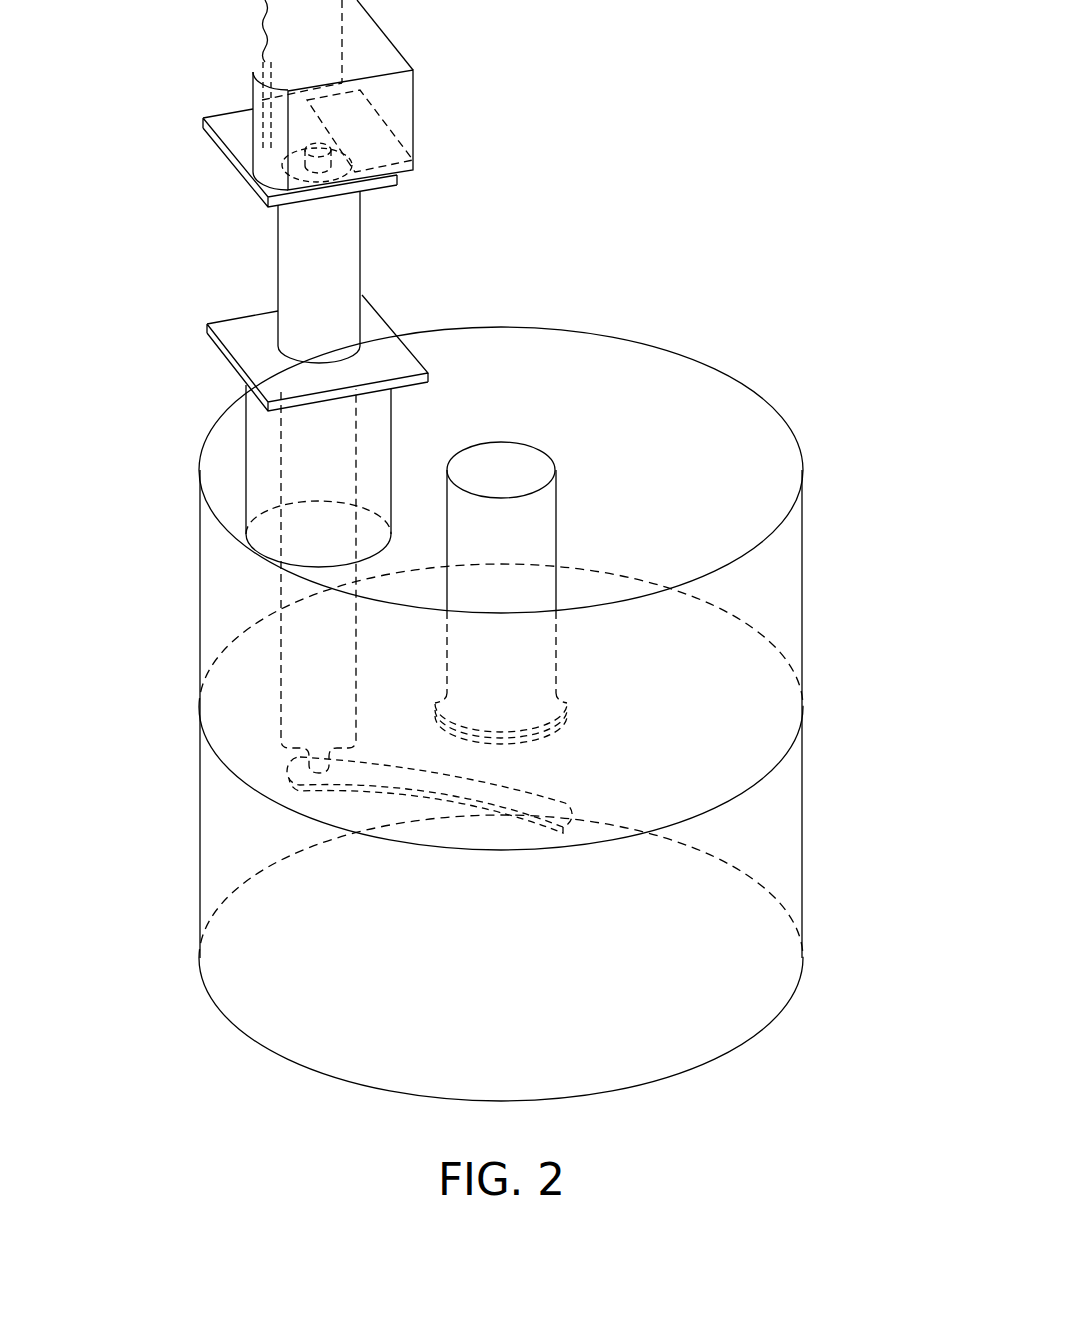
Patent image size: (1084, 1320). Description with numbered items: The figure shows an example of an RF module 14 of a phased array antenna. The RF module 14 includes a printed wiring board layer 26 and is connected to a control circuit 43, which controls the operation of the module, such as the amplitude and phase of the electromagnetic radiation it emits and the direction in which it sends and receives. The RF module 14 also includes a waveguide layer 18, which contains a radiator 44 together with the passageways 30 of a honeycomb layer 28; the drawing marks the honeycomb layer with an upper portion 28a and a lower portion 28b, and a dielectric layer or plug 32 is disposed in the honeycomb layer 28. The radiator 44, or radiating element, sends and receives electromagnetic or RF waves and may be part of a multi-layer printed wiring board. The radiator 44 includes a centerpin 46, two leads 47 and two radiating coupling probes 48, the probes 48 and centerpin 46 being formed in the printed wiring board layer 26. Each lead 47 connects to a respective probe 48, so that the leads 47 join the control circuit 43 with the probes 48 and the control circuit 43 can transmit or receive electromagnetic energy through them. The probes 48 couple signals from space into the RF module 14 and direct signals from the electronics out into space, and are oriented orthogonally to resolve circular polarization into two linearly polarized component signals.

The RF module 14 is at (499, 592).
The control circuit 43 is at (230, 35).
The printed wiring board layer 26 is at (203, 323).
The waveguide layer 18 is at (197, 707).
The honeycomb layer 28 is at (197, 957).
The radiator 44 is at (825, 527).
The upper portion of body 28a is at (767, 687).
The lower portion of body 28b is at (501, 999).
The dielectric plug 32 is at (318, 1073).
The centerpin 46 is at (562, 532).
The passageways 30 is at (572, 706).
The leads 47 is at (362, 640).
The radiating coupling probes 48 is at (565, 800).